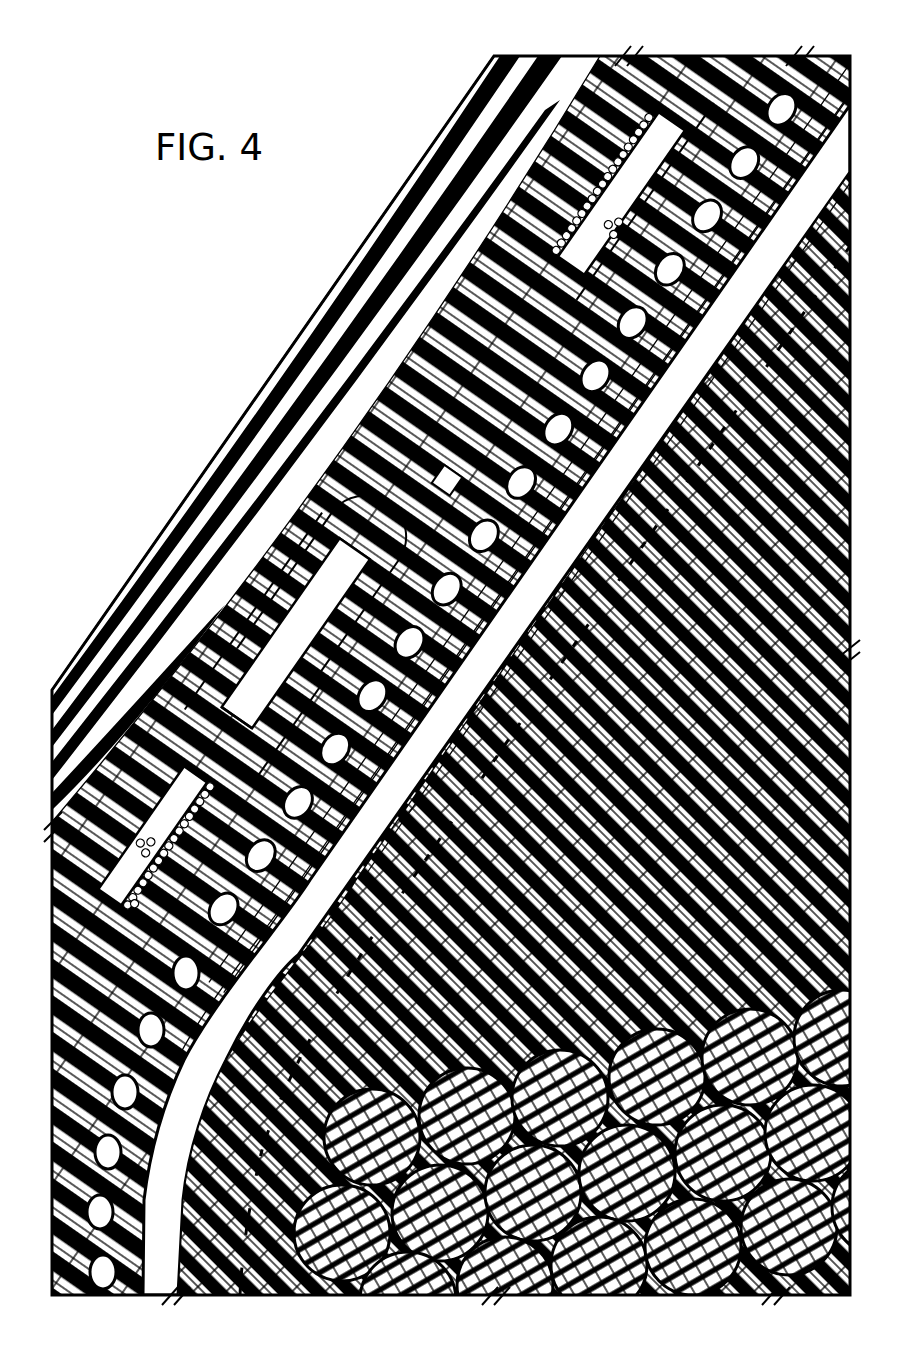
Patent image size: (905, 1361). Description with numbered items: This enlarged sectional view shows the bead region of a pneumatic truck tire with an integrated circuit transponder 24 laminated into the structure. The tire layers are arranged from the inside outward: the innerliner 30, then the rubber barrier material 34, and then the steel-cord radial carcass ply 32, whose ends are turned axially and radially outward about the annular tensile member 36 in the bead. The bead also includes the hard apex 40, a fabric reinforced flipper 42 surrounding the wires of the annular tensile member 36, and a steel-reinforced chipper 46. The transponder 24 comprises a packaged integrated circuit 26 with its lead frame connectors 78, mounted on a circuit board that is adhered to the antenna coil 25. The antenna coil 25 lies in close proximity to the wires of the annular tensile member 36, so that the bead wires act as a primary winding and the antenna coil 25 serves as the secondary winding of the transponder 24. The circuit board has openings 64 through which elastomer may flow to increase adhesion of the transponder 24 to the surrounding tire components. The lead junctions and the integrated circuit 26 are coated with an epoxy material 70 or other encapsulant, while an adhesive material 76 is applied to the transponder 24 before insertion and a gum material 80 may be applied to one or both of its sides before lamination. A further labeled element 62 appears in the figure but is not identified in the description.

The integrated circuit transponder 24 is at (230, 545).
The antenna coil 25 is at (560, 130).
The integrated circuit 26 is at (309, 664).
The innerliner 30 is at (367, 257).
The steel-cord radial carcass ply 32 is at (834, 167).
The rubber barrier material 34 is at (307, 390).
The annular tensile member 36 is at (850, 1115).
The apex 40 is at (840, 795).
The fabric reinforced flipper 42 is at (745, 425).
The steel-reinforced chipper 46 is at (774, 118).
The inner boundary band 62 is at (437, 640).
The openings 64 is at (252, 430).
The epoxy material 70 is at (240, 713).
The adhesive material 76 is at (580, 180).
The lead frame connectors 78 is at (362, 560).
The gum material 80 is at (736, 100).